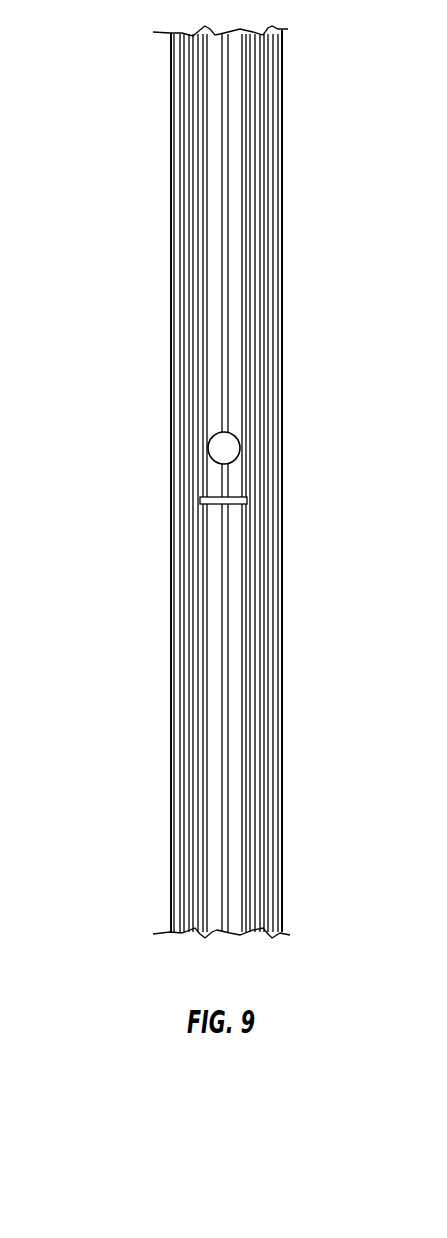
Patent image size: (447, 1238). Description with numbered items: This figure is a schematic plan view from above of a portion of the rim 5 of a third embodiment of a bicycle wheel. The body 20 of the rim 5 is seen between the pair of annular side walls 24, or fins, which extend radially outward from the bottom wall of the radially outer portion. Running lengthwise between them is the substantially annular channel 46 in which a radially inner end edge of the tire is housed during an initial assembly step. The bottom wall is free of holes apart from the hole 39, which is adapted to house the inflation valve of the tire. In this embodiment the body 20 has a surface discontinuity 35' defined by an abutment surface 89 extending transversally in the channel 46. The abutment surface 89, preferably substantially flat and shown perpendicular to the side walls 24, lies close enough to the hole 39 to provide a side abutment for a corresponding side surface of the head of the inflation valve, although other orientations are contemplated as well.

The rim 5 is at (180, 130).
The side walls 24 is at (180, 192).
The annular channel 46 is at (214, 266).
The hole 39 is at (220, 445).
The surface discontinuity 35' is at (110, 483).
The abutment surface 89 is at (220, 505).
The body 20 is at (212, 618).